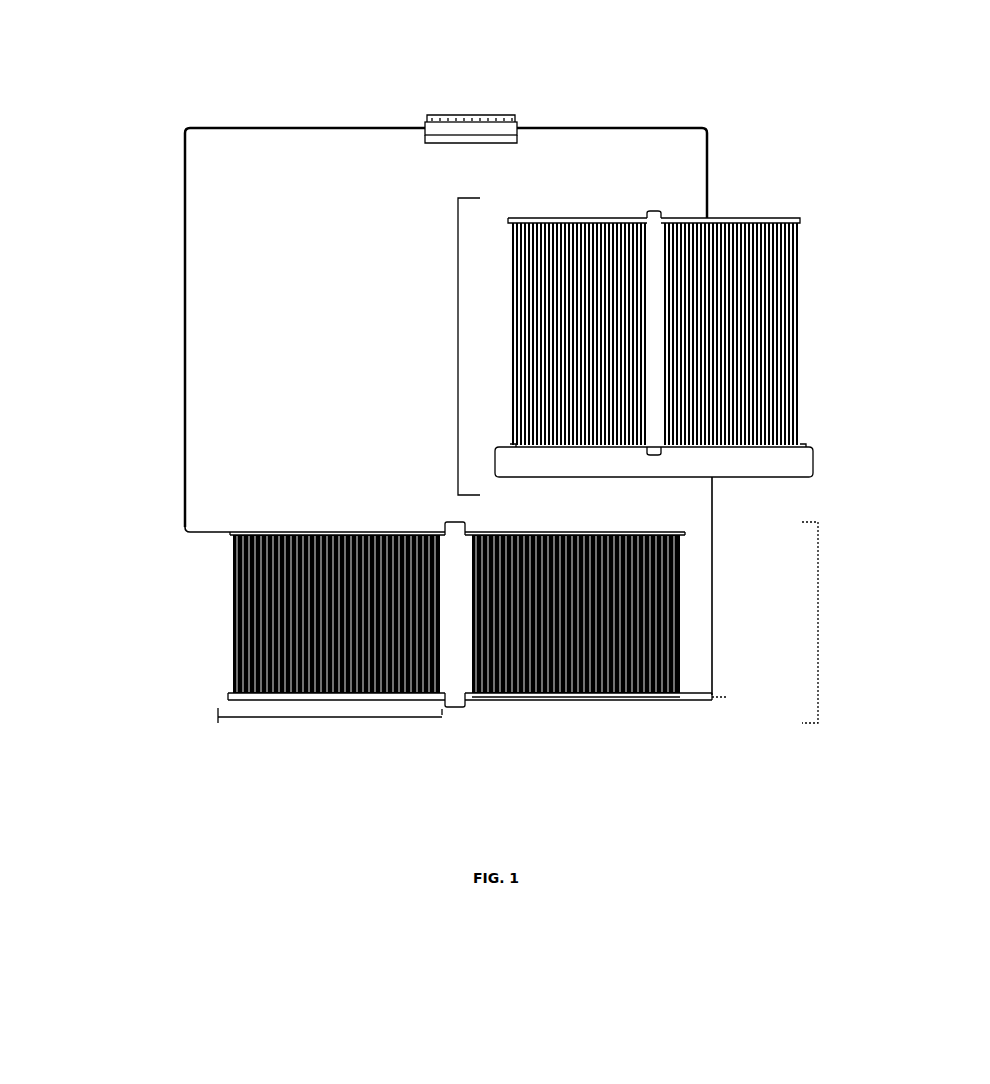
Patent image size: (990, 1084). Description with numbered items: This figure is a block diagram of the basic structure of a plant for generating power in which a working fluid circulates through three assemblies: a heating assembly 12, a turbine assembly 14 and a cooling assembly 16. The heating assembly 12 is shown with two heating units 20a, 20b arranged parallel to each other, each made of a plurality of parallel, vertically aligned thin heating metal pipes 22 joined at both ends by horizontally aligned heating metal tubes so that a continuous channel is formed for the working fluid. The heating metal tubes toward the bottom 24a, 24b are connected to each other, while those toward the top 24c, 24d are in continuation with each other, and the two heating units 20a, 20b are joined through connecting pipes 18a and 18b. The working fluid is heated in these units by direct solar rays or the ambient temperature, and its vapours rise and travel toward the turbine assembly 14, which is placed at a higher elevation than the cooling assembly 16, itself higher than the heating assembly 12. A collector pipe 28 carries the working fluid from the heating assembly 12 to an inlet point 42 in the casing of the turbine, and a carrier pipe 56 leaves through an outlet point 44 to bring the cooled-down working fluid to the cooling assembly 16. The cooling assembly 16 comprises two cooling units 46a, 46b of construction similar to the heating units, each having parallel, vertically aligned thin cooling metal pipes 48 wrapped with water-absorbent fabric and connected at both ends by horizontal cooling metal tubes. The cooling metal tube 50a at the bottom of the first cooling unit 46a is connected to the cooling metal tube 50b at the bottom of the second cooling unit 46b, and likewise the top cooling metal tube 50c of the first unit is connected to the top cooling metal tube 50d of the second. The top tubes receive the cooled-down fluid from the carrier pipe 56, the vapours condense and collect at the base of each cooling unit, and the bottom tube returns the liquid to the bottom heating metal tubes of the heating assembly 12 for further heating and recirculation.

The heating assembly 12 is at (818, 618).
The turbine assembly 14 is at (464, 115).
The cooling assembly 16 is at (458, 362).
The connecting pipe 18a is at (465, 703).
The connecting pipe 18b is at (465, 522).
The heating unit 20a is at (332, 717).
The heating unit 20b is at (632, 702).
The heating metal pipes 22 is at (233, 648).
The heating metal tube 24a is at (407, 697).
The heating metal tube 24b is at (677, 698).
The heating metal tube 24c is at (370, 532).
The heating metal tube 24d is at (687, 532).
The collector pipe 28 is at (185, 197).
The inlet point 42 is at (427, 128).
The outlet point 44 is at (518, 120).
The cooling unit 46a is at (577, 212).
The cooling unit 46b is at (747, 217).
The cooling metal pipes 48 is at (797, 285).
The cooling metal tube 50a is at (542, 453).
The cooling metal tube 50b is at (807, 452).
The cooling metal tube 50c is at (510, 218).
The cooling metal tube 50d is at (780, 220).
The carrier pipe 56 is at (695, 127).